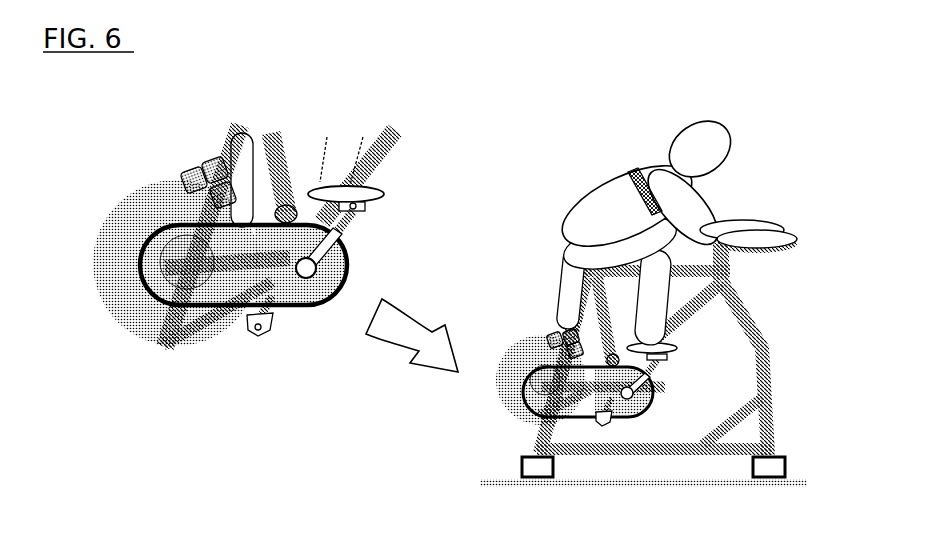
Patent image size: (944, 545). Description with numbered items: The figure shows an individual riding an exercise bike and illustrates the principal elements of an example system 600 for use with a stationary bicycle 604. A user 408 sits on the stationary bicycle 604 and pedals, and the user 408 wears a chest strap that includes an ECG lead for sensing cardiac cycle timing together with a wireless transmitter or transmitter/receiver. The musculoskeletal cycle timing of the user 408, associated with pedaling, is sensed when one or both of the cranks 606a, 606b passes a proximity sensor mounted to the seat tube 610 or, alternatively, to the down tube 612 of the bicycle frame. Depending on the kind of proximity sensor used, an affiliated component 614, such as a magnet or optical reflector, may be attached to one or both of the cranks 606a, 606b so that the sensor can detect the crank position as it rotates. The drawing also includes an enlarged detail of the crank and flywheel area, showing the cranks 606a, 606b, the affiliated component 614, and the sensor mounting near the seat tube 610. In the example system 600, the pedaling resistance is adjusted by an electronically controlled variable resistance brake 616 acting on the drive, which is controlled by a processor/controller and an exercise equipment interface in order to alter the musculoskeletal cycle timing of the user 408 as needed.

The system 600 is at (651, 265).
The stationary bicycle 604 is at (745, 331).
The user 408 is at (708, 212).
The seat tube 610 is at (592, 310).
The down tube 612 is at (683, 322).
The affiliated component 614 is at (353, 225).
The variable resistance brake 616 is at (187, 173).
The crank 606a is at (330, 237).
The crank 606b is at (270, 317).